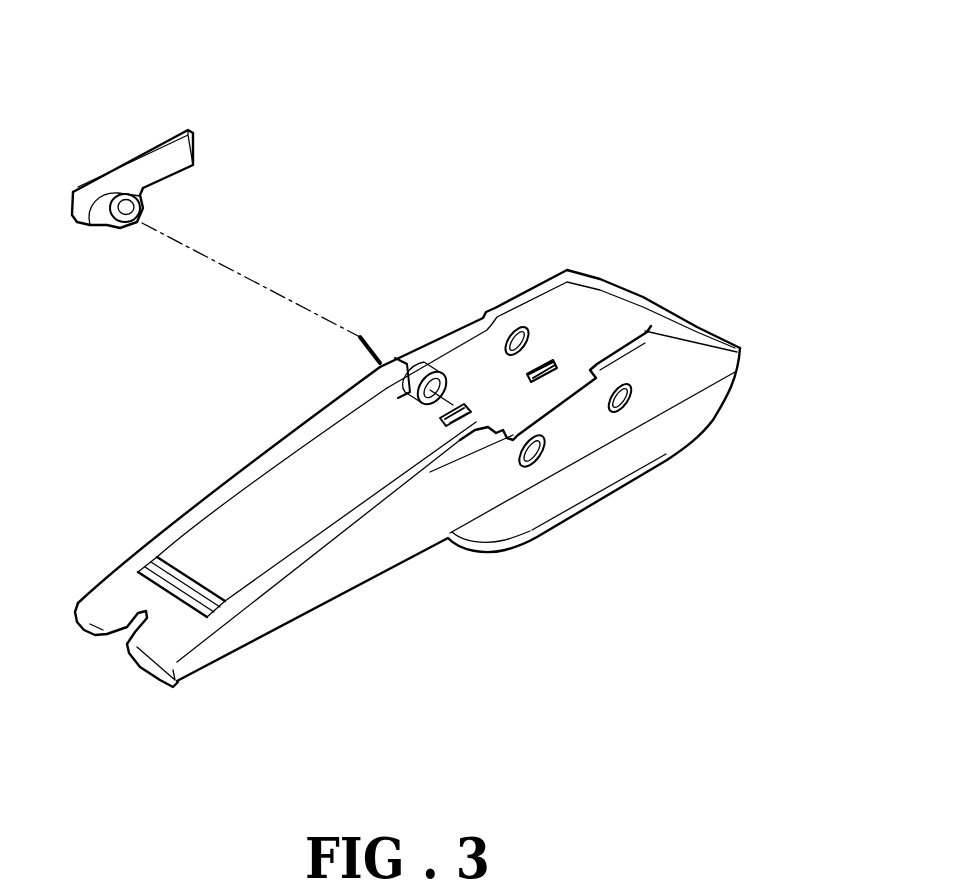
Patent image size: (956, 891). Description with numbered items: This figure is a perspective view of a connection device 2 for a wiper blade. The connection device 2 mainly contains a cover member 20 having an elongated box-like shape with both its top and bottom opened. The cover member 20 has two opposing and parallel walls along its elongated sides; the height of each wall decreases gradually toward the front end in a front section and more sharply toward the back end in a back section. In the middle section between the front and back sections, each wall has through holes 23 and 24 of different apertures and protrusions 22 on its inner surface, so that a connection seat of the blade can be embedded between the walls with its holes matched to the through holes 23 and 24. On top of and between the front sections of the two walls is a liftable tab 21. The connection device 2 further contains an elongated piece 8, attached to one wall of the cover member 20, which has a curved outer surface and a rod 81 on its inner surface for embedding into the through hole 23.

The connection device 2 is at (322, 322).
The elongated piece 8 is at (118, 187).
The rod 81 is at (118, 226).
The cover member 20 is at (340, 528).
The liftable tab 21 is at (273, 475).
The protrusions 22 is at (546, 359).
The through hole 23 is at (538, 470).
The through hole 24 is at (623, 413).